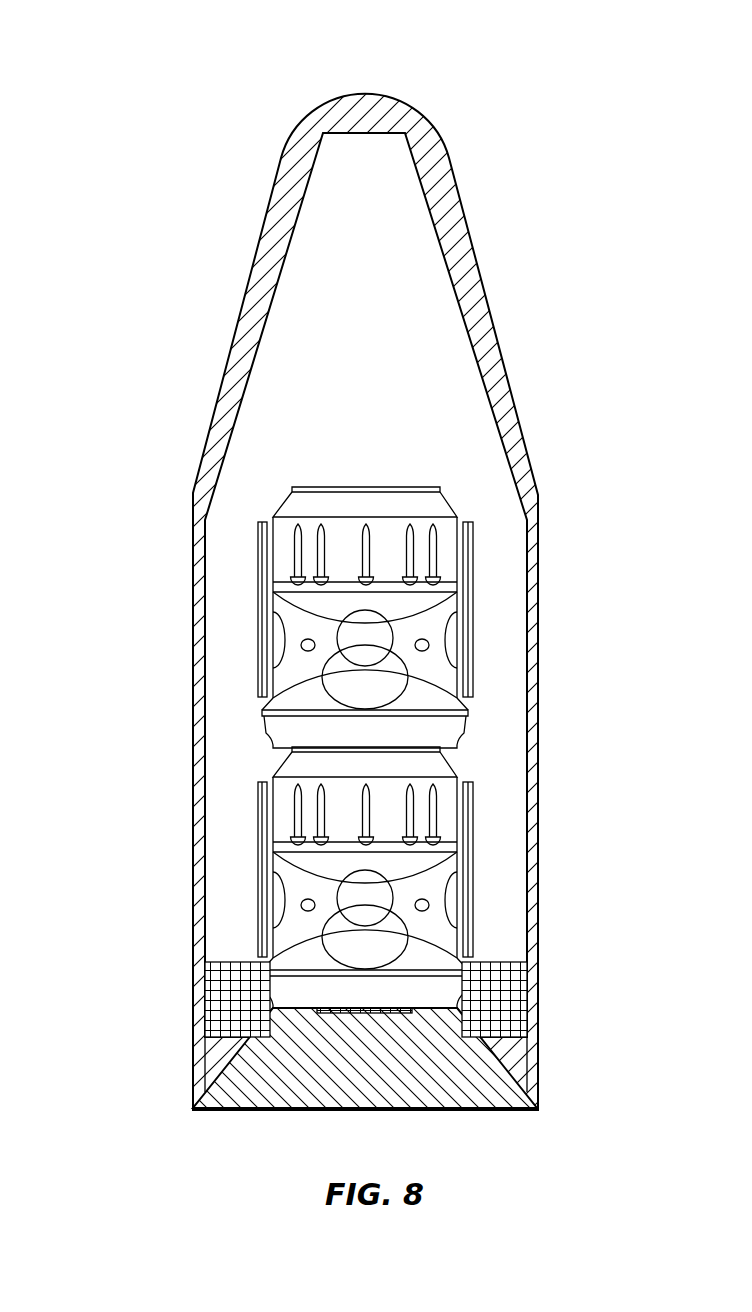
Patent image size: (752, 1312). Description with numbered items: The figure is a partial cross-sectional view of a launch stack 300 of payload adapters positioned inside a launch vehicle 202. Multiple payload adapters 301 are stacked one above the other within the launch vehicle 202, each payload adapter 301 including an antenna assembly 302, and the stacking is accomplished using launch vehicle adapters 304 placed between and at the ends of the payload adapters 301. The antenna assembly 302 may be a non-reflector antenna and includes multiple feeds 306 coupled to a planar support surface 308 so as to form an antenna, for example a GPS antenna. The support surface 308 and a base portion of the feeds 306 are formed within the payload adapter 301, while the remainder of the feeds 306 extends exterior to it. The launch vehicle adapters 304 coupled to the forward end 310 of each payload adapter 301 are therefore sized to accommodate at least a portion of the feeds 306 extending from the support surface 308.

The launch vehicle 202 is at (194, 128).
The launch stack 300 is at (238, 534).
The payload adapter 301 is at (278, 607).
The antenna assembly 302 is at (455, 551).
The launch vehicle adapter 304 is at (428, 505).
The feed 306 is at (320, 807).
The support surface 308 is at (450, 847).
The forward end 310 is at (450, 585).